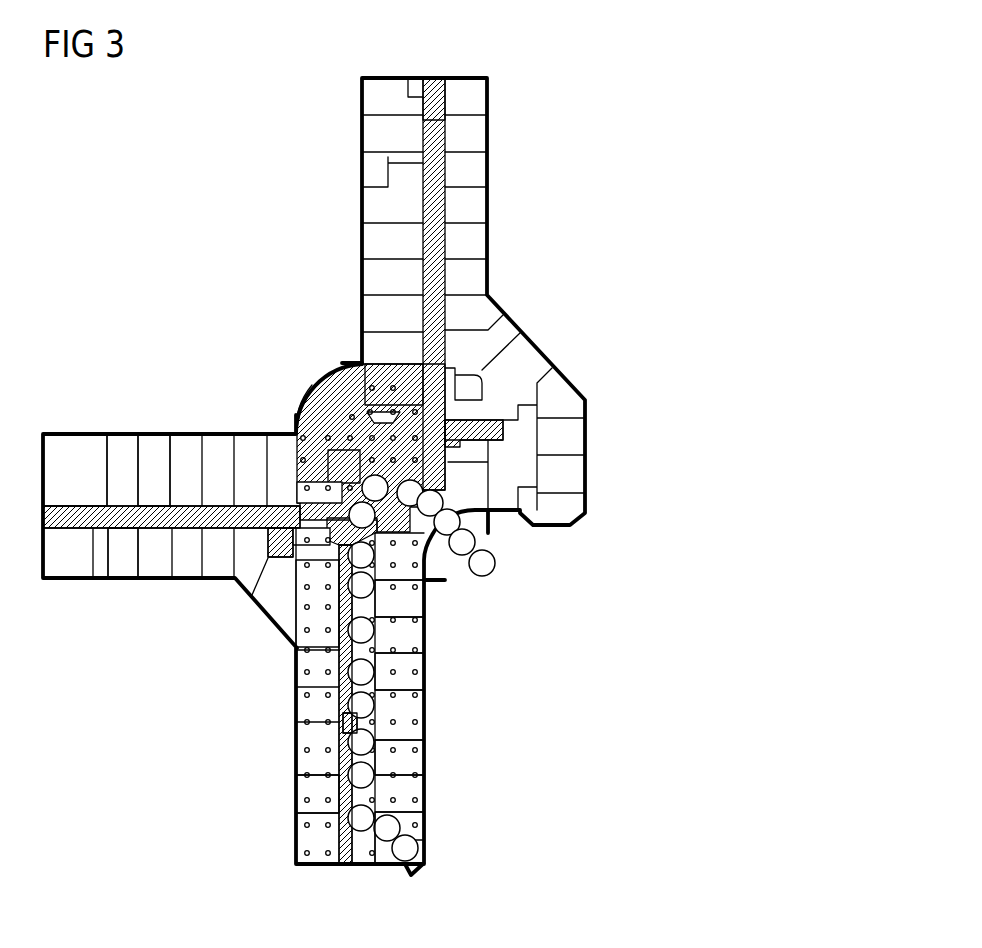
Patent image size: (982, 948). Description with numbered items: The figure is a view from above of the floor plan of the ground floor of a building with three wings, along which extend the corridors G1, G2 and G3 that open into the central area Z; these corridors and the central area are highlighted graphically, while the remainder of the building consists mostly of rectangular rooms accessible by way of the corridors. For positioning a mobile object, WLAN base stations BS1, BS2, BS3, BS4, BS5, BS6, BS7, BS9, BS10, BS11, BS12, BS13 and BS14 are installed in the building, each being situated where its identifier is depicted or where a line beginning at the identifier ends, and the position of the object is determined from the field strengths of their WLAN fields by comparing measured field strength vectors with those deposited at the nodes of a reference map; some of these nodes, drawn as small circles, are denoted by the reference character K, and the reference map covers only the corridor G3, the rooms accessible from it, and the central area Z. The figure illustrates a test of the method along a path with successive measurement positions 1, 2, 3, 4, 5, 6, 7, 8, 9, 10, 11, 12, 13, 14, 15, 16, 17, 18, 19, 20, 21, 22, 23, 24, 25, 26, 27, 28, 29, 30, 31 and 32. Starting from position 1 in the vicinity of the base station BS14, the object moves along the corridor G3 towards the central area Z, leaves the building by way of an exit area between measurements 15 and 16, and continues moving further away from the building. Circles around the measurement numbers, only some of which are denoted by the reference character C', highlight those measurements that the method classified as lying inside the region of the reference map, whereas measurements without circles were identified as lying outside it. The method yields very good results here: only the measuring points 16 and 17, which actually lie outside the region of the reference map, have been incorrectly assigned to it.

The measurement position 1 is at (405, 848).
The measurement position 2 is at (387, 828).
The measurement position 3 is at (361, 818).
The measurement position 4 is at (361, 775).
The measurement position 5 is at (361, 742).
The measurement position 6 is at (361, 705).
The measurement position 7 is at (361, 672).
The measurement position 8 is at (361, 630).
The measurement position 9 is at (361, 585).
The measurement position 10 is at (361, 555).
The measurement position 11 is at (362, 515).
The measurement position 12 is at (375, 488).
The measurement position 13 is at (410, 493).
The measurement position 14 is at (430, 503).
The measurement position 15 is at (447, 522).
The measurement position 16 is at (462, 542).
The measurement position 17 is at (482, 563).
The measurement position 18 is at (501, 584).
The measurement position 19 is at (519, 604).
The measurement position 20 is at (544, 640).
The measurement position 21 is at (564, 662).
The measurement position 22 is at (584, 690).
The measurement position 23 is at (599, 712).
The measurement position 24 is at (616, 732).
The measurement position 25 is at (644, 757).
The measurement position 26 is at (674, 772).
The measurement position 27 is at (716, 789).
The measurement position 28 is at (759, 804).
The measurement position 29 is at (786, 807).
The measurement position 30 is at (818, 822).
The measurement position 31 is at (851, 832).
The measurement position 32 is at (884, 852).
The WLAN base station BS1 is at (421, 765).
The WLAN base station BS2 is at (107, 470).
The WLAN base station BS3 is at (117, 553).
The WLAN base station BS4 is at (159, 470).
The WLAN base station BS5 is at (421, 678).
The WLAN base station BS6 is at (421, 603).
The WLAN base station BS7 is at (362, 725).
The WLAN base station BS9 is at (296, 531).
The WLAN base station BS10 is at (316, 802).
The WLAN base station BS11 is at (382, 377).
The WLAN base station BS12 is at (474, 418).
The WLAN base station BS13 is at (313, 603).
The WLAN base station BS14 is at (422, 850).
The corridor G1 is at (77, 516).
The corridor G2 is at (431, 73).
The corridor G3 is at (357, 866).
The node K is at (424, 723).
The central area Z is at (316, 433).
The circle C' is at (377, 694).